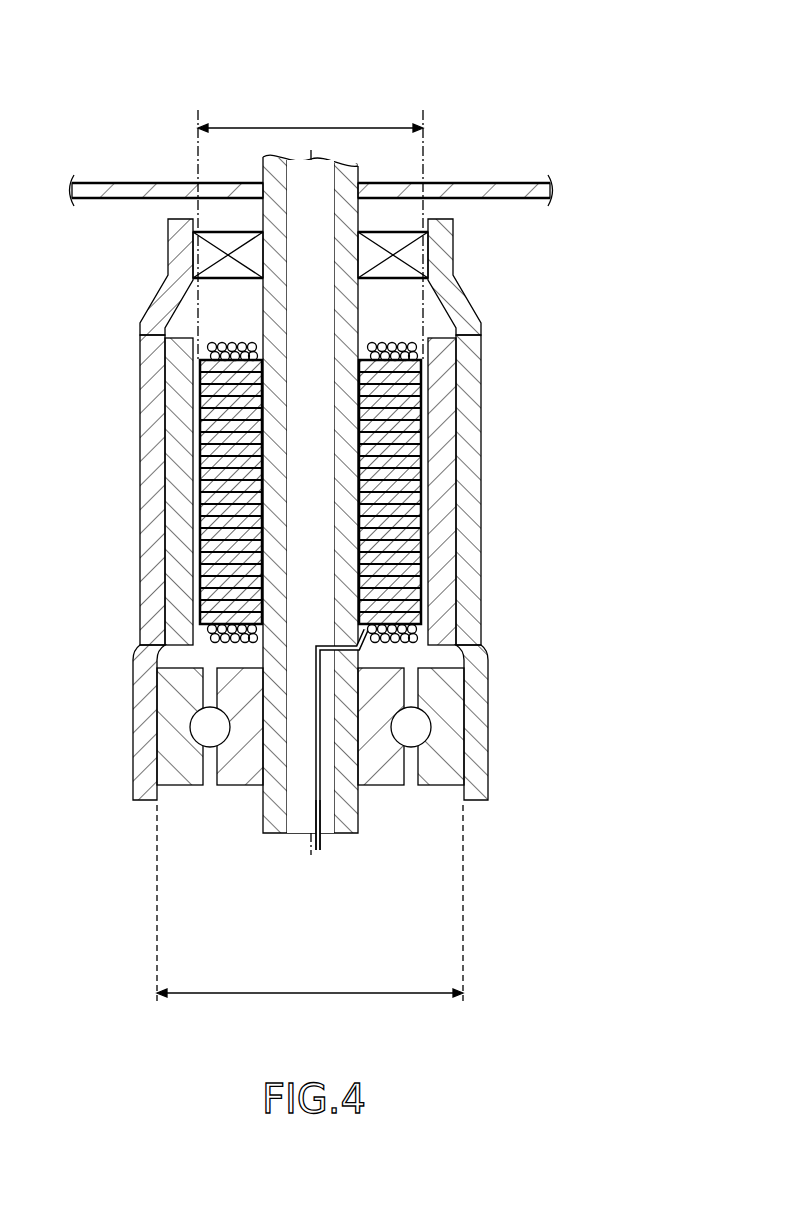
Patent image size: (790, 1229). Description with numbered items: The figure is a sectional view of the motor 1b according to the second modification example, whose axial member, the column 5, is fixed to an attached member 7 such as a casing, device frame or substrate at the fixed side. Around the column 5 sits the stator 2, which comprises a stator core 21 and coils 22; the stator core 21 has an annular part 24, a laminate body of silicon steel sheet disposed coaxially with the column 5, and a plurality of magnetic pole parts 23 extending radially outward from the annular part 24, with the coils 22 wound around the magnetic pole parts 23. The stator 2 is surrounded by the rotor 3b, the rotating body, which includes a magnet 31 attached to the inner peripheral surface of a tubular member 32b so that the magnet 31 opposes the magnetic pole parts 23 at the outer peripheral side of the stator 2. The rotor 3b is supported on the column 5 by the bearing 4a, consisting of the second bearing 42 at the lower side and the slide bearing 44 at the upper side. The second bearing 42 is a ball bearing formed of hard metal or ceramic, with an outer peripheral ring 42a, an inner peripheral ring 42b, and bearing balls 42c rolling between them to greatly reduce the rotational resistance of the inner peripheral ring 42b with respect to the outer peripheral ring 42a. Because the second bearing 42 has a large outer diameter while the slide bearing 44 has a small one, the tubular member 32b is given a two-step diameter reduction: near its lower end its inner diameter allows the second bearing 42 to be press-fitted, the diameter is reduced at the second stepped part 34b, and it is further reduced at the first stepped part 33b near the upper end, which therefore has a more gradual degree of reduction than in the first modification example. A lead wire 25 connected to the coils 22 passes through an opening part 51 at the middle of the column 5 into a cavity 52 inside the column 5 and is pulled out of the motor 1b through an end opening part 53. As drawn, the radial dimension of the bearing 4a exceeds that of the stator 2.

The motor 1b is at (578, 82).
The attached member 7 is at (512, 182).
The slide bearing 44 is at (415, 254).
The bearing 4a is at (425, 530).
The second bearing 42 is at (425, 748).
The outer peripheral ring 42a is at (435, 757).
The inner peripheral ring 42b is at (380, 778).
The bearing balls 42c is at (413, 725).
The first stepped part 33b is at (157, 298).
The tubular member 32b is at (483, 400).
The magnet 31 is at (447, 448).
The rotor 3b is at (391, 490).
The second stepped part 34b is at (136, 660).
The column 5 is at (293, 529).
The cavity 52 is at (297, 830).
The stator 2 is at (417, 494).
The stator core 21 is at (401, 492).
The magnetic pole parts 23 is at (418, 495).
The annular part 24 is at (362, 516).
The coils 22 is at (397, 645).
The opening part 51 is at (445, 778).
The end opening part 53 is at (327, 840).
The lead wire 25 is at (337, 838).